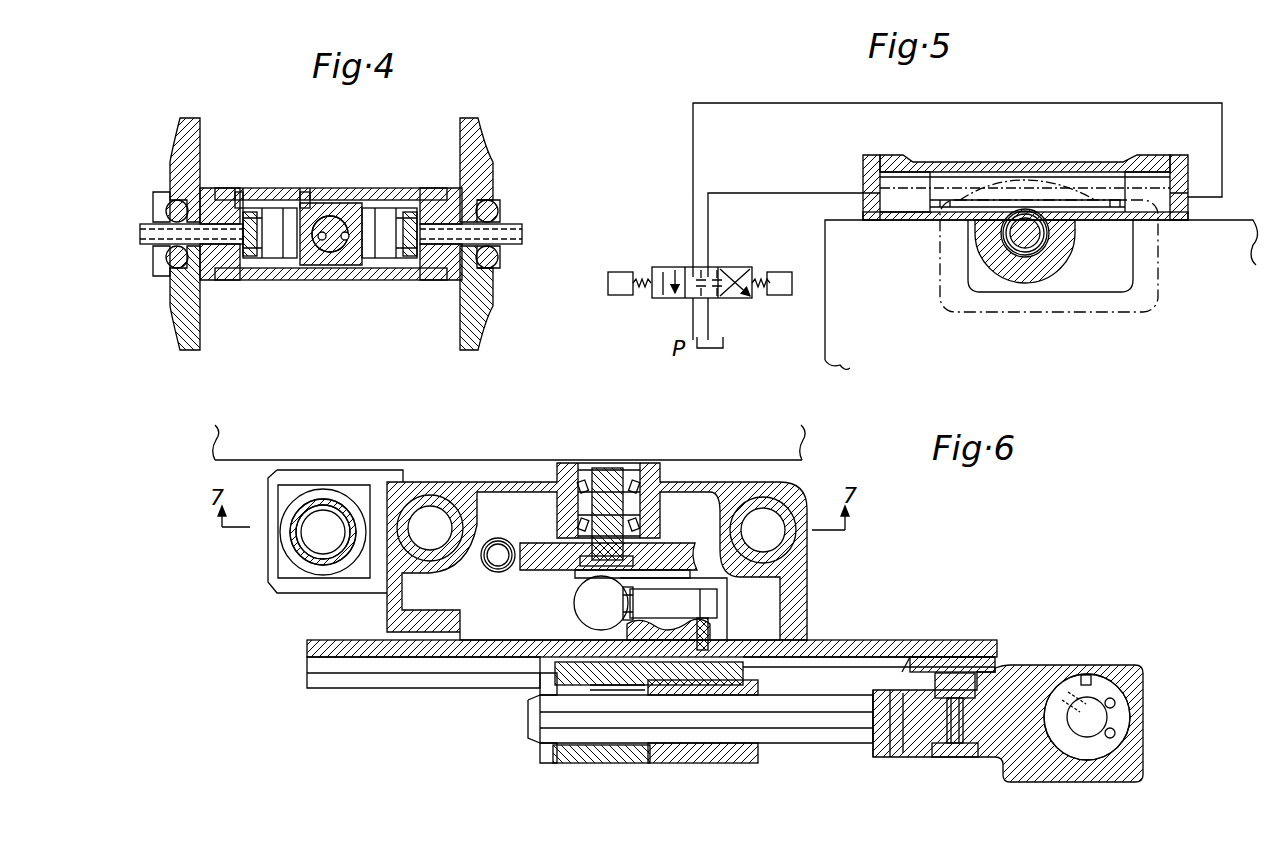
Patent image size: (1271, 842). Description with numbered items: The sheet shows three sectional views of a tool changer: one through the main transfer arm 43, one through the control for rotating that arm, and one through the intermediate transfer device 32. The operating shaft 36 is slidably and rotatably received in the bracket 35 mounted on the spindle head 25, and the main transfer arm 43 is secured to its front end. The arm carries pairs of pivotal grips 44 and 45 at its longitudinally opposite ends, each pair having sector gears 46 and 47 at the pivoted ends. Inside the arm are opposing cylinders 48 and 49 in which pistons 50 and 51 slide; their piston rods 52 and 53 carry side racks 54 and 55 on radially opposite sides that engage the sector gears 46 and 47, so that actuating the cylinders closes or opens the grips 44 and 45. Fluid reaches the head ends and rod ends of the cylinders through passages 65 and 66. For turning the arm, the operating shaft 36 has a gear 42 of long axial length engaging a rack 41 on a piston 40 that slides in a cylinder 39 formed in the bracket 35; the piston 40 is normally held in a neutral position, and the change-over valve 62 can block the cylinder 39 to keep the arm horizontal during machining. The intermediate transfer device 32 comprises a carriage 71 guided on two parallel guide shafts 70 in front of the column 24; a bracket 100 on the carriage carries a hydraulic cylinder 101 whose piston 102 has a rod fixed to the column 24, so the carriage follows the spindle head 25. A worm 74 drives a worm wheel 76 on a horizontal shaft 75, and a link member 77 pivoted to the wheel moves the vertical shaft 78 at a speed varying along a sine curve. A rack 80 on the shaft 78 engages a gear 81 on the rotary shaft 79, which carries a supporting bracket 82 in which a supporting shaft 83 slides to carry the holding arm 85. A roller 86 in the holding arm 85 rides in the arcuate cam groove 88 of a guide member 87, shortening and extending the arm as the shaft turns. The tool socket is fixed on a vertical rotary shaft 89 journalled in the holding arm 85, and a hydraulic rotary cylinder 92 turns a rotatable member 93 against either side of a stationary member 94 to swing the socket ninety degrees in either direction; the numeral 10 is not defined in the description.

In FIG. 6, the spindle 10 is at (672, 566).
In FIG. 6, the column 24 is at (258, 460).
In FIG. 5, the spindle head 25 is at (825, 330).
In FIG. 6, the intermediate transfer device 32 is at (510, 722).
In FIG. 5, the bracket 35 is at (981, 158).
In FIG. 4, the operating shaft 36 is at (332, 253).
In FIG. 5, the operating shaft 36 is at (1040, 240).
In FIG. 5, the cylinder 39 is at (906, 214).
In FIG. 5, the piston 40 is at (1078, 178).
In FIG. 5, the rack 41 is at (1090, 212).
In FIG. 5, the gear 42 is at (1021, 278).
In FIG. 4, the main transfer arm 43 is at (340, 189).
In FIG. 4, the grips 44 is at (485, 152).
In FIG. 4, the grips 45 is at (182, 152).
In FIG. 4, the sector gear 46 is at (500, 202).
In FIG. 4, the sector gear 47 is at (166, 202).
In FIG. 4, the cylinder 48 is at (382, 258).
In FIG. 4, the cylinder 49 is at (272, 212).
In FIG. 4, the piston 50 is at (402, 212).
In FIG. 4, the piston 51 is at (252, 252).
In FIG. 4, the piston rod 52 is at (434, 268).
In FIG. 4, the piston rod 53 is at (228, 206).
In FIG. 4, the side rack 54 is at (510, 226).
In FIG. 4, the side rack 55 is at (152, 226).
In FIG. 5, the change-over valve 62 is at (727, 268).
In FIG. 4, the passage 65 is at (300, 262).
In FIG. 4, the passage 66 is at (366, 196).
In FIG. 6, the guide shafts 70 is at (432, 496).
In FIG. 6, the carriage 71 is at (702, 484).
In FIG. 6, the worm 74 is at (501, 547).
In FIG. 6, the shaft 75 is at (592, 465).
In FIG. 6, the worm wheel 76 is at (504, 568).
In FIG. 6, the link member 77 is at (590, 577).
In FIG. 6, the shaft 78 is at (596, 605).
In FIG. 6, the rotary shaft 79 is at (710, 636).
In FIG. 6, the rack 80 is at (620, 612).
In FIG. 6, the gear 81 is at (702, 603).
In FIG. 6, the supporting bracket 82 is at (575, 764).
In FIG. 6, the supporting shaft 83 is at (786, 752).
In FIG. 6, the holding arm 85 is at (1012, 770).
In FIG. 6, the roller 86 is at (950, 676).
In FIG. 6, the guide member 87 is at (912, 652).
In FIG. 6, the cam groove 88 is at (970, 672).
In FIG. 6, the rotary shaft 89 is at (1136, 703).
In FIG. 6, the hydraulic rotary cylinder 92 is at (1073, 760).
In FIG. 6, the rotatable member 93 is at (1080, 680).
In FIG. 6, the stationary member 94 is at (1128, 733).
In FIG. 6, the bracket 100 is at (345, 470).
In FIG. 6, the hydraulic cylinder 101 is at (290, 540).
In FIG. 6, the piston 102 is at (323, 545).